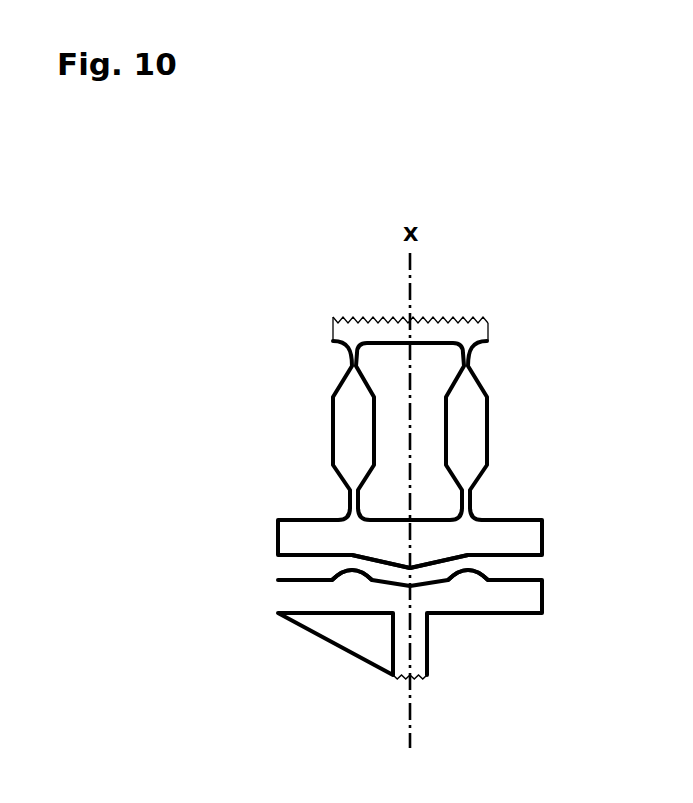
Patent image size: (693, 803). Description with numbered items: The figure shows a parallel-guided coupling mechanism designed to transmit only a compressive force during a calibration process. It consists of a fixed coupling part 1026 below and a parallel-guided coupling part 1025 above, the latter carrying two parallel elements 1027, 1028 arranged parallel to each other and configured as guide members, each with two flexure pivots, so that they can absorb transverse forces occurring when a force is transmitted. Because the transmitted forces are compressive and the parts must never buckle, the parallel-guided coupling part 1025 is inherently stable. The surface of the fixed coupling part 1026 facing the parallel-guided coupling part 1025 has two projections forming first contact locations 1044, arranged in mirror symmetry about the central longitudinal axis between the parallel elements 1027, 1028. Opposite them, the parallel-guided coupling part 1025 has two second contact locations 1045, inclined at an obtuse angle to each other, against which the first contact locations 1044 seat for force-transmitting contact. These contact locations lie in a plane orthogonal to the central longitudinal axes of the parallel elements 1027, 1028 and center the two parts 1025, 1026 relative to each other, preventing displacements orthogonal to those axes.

The parallel-guided coupling part 1025 is at (436, 454).
The fixed coupling part 1026 is at (557, 630).
The parallel element 1027 is at (343, 423).
The parallel element 1028 is at (478, 418).
The first contact locations 1044 is at (352, 580).
The second contact locations 1045 is at (430, 560).